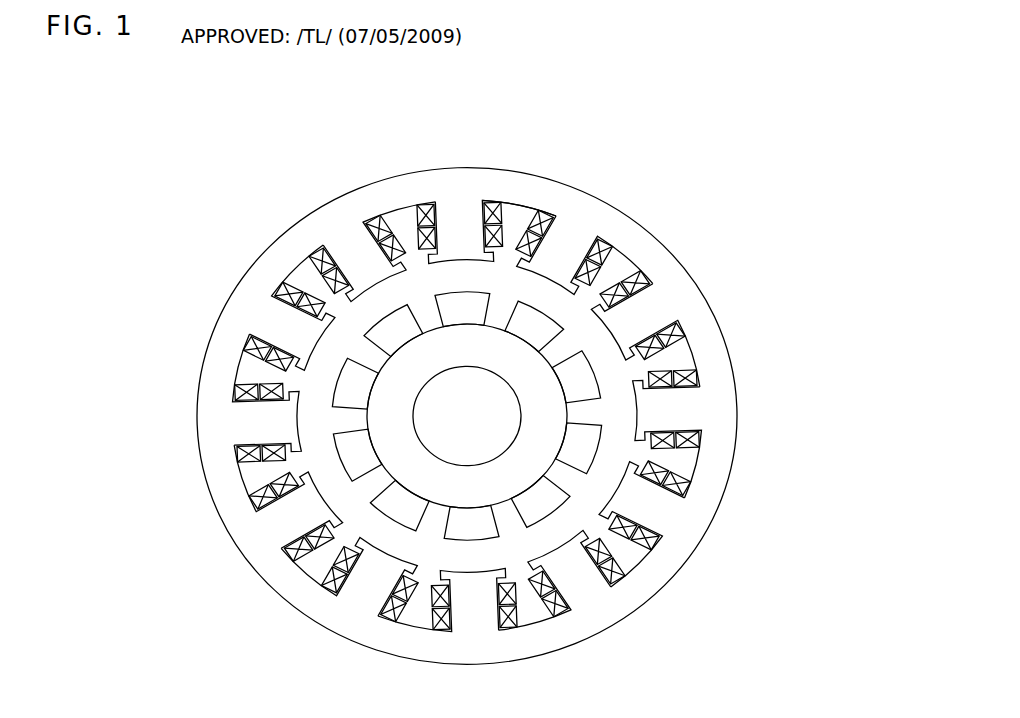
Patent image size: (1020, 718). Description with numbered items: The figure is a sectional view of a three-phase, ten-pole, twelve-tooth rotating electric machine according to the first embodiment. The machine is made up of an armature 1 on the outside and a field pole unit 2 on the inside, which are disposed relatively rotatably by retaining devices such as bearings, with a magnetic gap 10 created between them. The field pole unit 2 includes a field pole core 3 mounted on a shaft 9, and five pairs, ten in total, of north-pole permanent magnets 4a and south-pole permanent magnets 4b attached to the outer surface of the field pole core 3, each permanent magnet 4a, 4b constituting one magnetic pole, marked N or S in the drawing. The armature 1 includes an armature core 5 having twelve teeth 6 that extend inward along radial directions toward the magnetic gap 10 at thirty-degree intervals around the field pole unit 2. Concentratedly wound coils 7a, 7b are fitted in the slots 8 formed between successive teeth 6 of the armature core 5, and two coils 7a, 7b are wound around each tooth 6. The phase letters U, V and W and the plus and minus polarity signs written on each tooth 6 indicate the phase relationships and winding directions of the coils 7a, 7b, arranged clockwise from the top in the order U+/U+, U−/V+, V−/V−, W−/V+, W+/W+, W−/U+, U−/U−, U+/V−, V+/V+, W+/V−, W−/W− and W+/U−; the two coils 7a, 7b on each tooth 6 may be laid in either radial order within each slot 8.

The armature 1 is at (617, 108).
The field pole unit 2 is at (743, 195).
The field pole core 3 is at (510, 360).
The north-pole permanent magnet 4a is at (558, 367).
The south-pole permanent magnet 4b is at (602, 430).
The armature core 5 is at (363, 200).
The tooth 6 is at (442, 202).
The coil 7a is at (492, 205).
The coil 7b is at (505, 225).
The slot 8 is at (517, 227).
The shaft 9 is at (440, 435).
The magnetic gap 10 is at (337, 343).